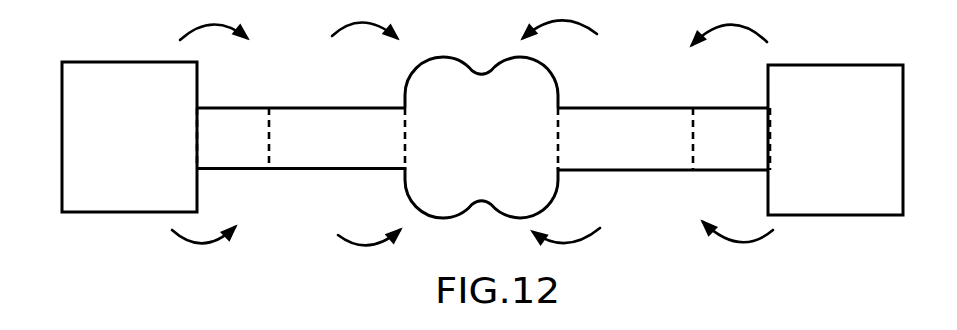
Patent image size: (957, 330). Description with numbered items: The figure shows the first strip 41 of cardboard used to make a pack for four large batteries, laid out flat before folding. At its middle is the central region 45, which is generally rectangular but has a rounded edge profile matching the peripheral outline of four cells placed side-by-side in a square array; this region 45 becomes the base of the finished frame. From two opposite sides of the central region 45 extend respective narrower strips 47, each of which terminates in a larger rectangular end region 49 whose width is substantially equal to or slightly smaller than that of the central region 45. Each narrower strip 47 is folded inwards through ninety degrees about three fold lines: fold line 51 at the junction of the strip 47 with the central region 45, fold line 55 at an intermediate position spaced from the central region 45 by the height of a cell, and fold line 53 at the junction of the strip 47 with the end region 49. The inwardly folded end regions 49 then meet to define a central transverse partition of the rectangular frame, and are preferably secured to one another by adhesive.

The first strip 41 is at (634, 73).
The central region 45 is at (495, 147).
The narrower strip 47 is at (347, 122).
The end region 49 is at (147, 147).
The fold line 51 is at (404, 143).
The fold line 53 is at (197, 157).
The fold line 55 is at (268, 138).